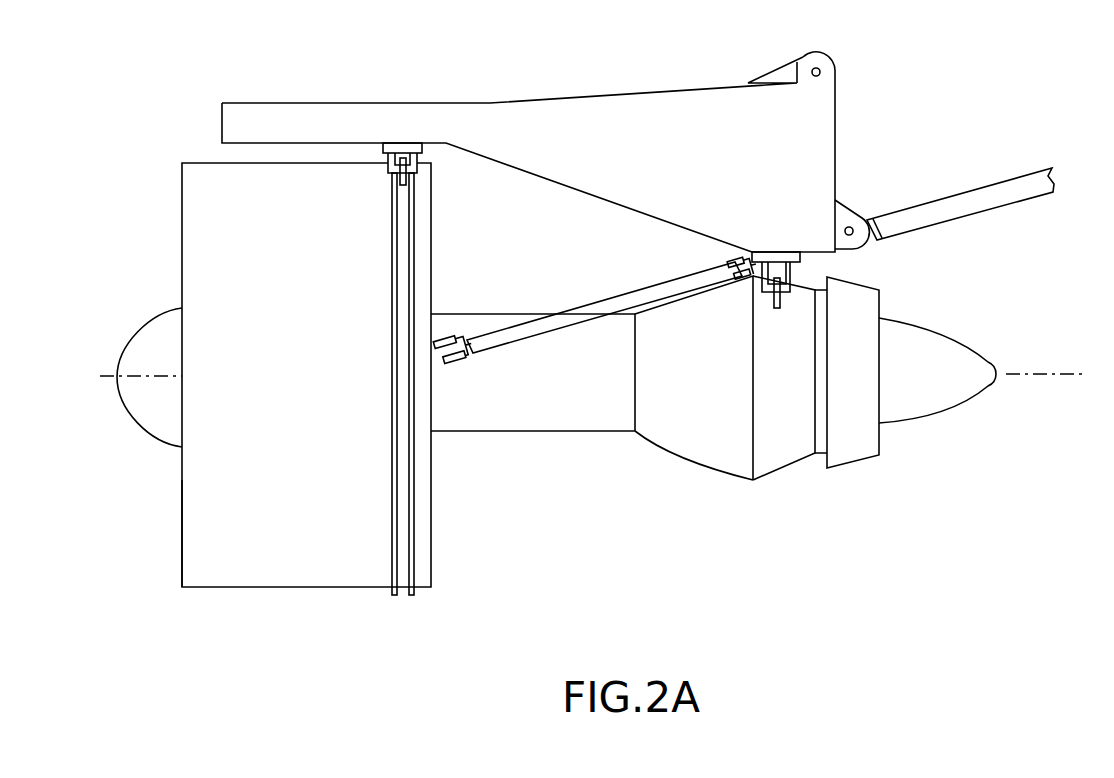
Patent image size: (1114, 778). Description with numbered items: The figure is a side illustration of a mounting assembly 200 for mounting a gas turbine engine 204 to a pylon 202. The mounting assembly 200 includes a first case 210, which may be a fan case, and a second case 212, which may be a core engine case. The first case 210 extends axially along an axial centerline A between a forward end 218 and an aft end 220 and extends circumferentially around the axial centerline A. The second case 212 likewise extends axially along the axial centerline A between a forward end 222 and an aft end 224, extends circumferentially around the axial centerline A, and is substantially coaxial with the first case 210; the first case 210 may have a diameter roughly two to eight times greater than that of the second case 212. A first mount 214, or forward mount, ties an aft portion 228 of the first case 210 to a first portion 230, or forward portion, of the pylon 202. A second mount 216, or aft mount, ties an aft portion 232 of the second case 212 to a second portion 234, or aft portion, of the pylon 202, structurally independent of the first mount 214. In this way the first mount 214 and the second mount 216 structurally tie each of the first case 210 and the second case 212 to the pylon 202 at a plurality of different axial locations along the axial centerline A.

The mounting assembly 200 is at (76, 130).
The pylon 202 is at (730, 97).
The gas turbine engine 204 is at (270, 602).
The first case 210 is at (185, 503).
The second case 212 is at (577, 430).
The first mount 214 is at (401, 124).
The second mount 216 is at (775, 236).
The forward end 218 is at (182, 549).
The aft end 220 is at (432, 548).
The forward end 222 is at (436, 432).
The aft end 224 is at (796, 460).
The aft portion 228 is at (371, 580).
The first portion 230 is at (422, 96).
The aft portion 232 is at (771, 458).
The second portion 234 is at (822, 176).
The axial centerline A is at (1070, 378).